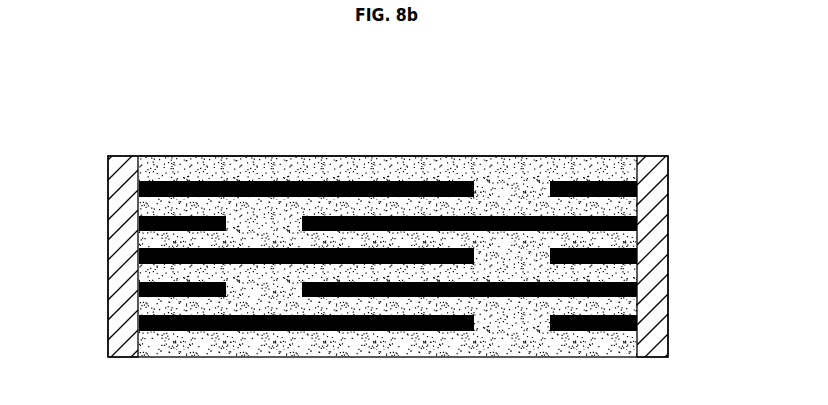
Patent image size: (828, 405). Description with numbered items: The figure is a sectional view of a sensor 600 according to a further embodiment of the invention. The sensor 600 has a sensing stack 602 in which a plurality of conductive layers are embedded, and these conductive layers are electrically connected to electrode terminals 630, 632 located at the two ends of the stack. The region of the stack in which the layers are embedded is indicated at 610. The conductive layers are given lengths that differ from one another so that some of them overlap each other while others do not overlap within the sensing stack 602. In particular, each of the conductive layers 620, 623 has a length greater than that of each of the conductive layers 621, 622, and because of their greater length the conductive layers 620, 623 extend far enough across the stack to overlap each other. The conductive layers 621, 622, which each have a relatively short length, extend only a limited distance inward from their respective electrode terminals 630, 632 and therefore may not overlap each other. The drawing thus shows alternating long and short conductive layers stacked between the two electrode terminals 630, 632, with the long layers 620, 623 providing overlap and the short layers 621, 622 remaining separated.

The sensor 600 is at (145, 106).
The sensing stack 602 is at (216, 147).
The dielectric layer 610 is at (387, 165).
The conductive layer 620 is at (139, 189).
The conductive layer 621 is at (139, 223).
The conductive layer 622 is at (637, 189).
The conductive layer 623 is at (637, 223).
The electrode terminal 630 is at (117, 168).
The electrode terminal 632 is at (650, 160).